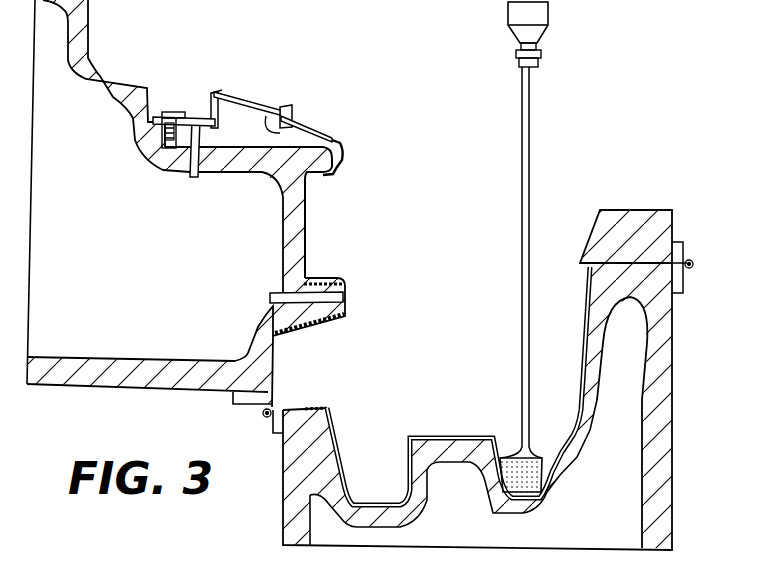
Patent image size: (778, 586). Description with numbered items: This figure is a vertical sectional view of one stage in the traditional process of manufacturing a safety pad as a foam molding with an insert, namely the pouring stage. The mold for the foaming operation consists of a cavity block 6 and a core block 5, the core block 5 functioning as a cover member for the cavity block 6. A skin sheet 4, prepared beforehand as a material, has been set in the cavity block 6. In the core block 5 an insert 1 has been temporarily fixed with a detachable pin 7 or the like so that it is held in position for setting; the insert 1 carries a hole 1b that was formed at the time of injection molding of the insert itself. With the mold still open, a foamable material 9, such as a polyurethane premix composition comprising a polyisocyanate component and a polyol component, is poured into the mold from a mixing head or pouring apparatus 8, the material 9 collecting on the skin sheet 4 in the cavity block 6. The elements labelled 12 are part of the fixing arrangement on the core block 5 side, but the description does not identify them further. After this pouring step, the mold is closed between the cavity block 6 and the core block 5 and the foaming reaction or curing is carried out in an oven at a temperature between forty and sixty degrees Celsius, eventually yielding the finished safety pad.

The insert 1 is at (324, 187).
The hole 1b is at (236, 100).
The skin sheet 4 is at (340, 448).
The core block 5 is at (163, 68).
The cavity block 6 is at (693, 212).
The detachable pin 7 is at (188, 178).
The mixing head or pouring apparatus 8 is at (537, 17).
The foamable material 9 is at (530, 170).
The clip 12 is at (210, 105).